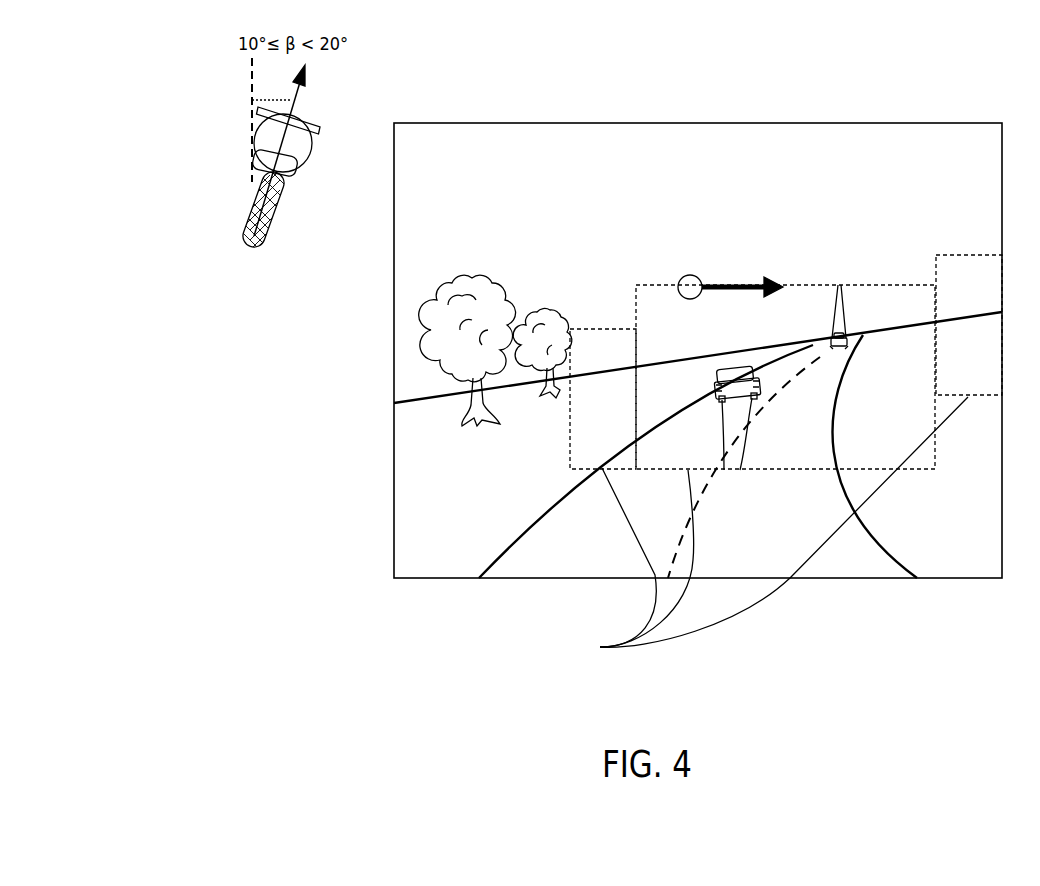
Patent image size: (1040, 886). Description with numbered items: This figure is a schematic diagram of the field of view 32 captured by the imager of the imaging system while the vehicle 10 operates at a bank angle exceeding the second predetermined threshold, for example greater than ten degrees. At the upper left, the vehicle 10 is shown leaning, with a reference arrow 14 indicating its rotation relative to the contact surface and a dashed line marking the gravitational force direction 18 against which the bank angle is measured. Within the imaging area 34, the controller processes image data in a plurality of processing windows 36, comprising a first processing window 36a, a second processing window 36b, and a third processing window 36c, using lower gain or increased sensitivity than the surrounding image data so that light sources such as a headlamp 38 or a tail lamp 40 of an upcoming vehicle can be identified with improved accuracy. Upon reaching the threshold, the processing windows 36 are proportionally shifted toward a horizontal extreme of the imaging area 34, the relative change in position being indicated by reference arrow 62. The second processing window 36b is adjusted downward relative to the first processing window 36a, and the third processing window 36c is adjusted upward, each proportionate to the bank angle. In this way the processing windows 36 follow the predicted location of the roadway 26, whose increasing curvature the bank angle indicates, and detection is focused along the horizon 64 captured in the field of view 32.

The vehicle 10 is at (262, 150).
The reference arrow 14 is at (285, 145).
The gravitational force direction 18 is at (250, 82).
The roadway 26 is at (560, 527).
The field of view 32 is at (581, 141).
The imaging area 34 is at (764, 123).
The processing windows 36 is at (600, 647).
The first processing window 36a is at (815, 415).
The second processing window 36b is at (625, 409).
The third processing window 36c is at (996, 344).
The headlamp 38 is at (740, 470).
The tail lamp 40 is at (840, 285).
The reference arrow 62 is at (730, 283).
The horizon 64 is at (432, 395).